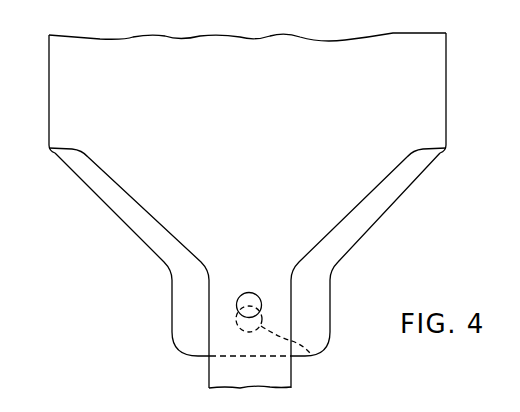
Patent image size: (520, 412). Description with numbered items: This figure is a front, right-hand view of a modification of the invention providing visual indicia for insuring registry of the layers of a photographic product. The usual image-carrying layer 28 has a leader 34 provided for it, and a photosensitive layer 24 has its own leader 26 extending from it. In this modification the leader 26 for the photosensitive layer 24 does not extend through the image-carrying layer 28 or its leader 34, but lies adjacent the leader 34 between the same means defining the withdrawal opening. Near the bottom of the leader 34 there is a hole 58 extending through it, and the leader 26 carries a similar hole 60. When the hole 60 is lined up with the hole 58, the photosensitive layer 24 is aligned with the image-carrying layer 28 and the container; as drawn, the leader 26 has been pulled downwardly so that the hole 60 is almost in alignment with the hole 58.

The photosensitive layer 24 is at (55, 88).
The image-carrying layer 28 is at (109, 200).
The leader 34 is at (183, 343).
The leader 26 is at (212, 380).
The hole 60 is at (266, 266).
The hole 58 is at (310, 353).